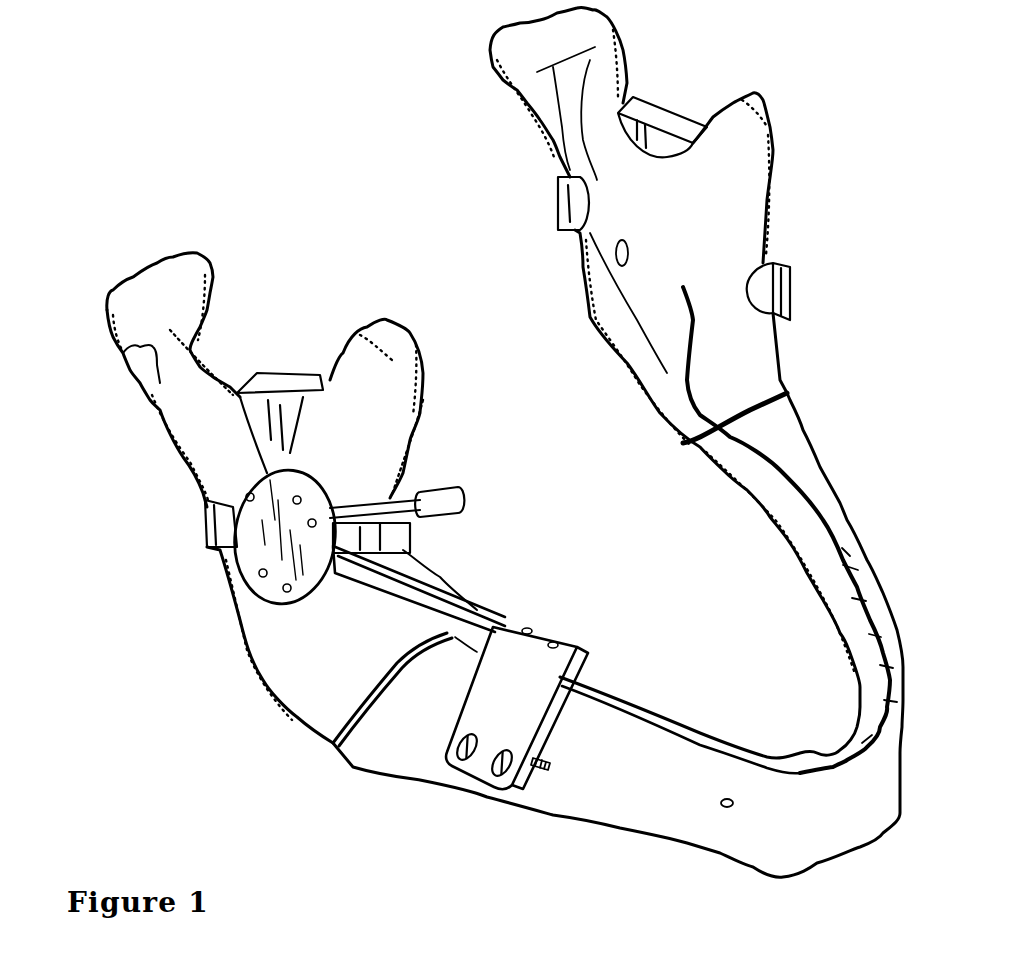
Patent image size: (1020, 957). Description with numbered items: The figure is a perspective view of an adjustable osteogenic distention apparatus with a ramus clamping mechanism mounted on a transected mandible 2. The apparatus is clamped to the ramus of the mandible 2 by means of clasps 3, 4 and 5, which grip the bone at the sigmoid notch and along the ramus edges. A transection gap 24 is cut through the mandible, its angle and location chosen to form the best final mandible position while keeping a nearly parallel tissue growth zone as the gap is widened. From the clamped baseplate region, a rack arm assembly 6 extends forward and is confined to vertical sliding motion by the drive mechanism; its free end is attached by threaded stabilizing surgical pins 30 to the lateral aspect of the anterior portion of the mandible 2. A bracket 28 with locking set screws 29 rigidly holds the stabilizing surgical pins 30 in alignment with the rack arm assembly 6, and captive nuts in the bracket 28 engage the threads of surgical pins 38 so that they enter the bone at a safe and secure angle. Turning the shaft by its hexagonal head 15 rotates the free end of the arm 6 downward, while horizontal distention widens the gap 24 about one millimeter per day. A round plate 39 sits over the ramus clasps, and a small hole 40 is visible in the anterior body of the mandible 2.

The mandible 2 is at (172, 378).
The clasp 3 is at (210, 533).
The clasp 4 is at (297, 413).
The clasp 5 is at (407, 527).
The rack arm assembly 6 is at (480, 605).
The hexagonal head 15 is at (463, 492).
The transection gap 24 is at (333, 747).
The bracket 28 is at (537, 712).
The set screw 29 is at (560, 637).
The threaded stabilizing surgical pins 30 is at (470, 763).
The threaded surgical pins 38 is at (552, 763).
The fixation disc 39 is at (268, 602).
The screw hole 40 is at (720, 807).